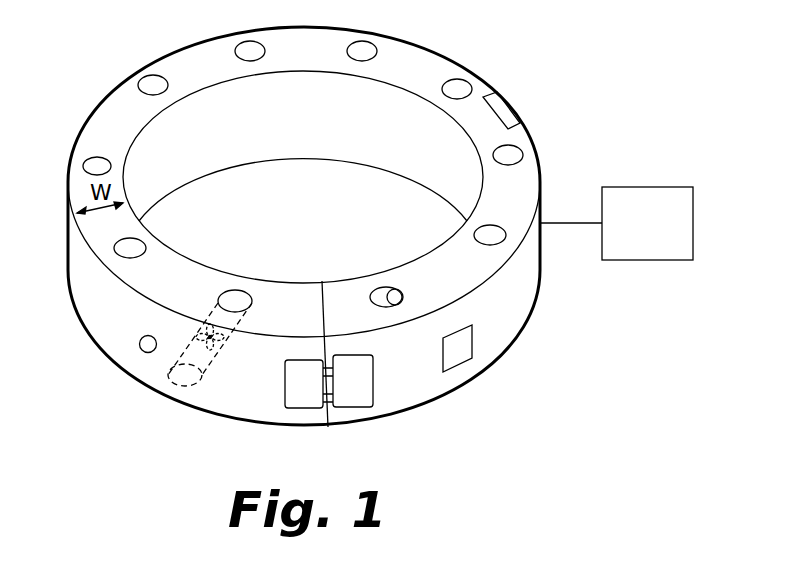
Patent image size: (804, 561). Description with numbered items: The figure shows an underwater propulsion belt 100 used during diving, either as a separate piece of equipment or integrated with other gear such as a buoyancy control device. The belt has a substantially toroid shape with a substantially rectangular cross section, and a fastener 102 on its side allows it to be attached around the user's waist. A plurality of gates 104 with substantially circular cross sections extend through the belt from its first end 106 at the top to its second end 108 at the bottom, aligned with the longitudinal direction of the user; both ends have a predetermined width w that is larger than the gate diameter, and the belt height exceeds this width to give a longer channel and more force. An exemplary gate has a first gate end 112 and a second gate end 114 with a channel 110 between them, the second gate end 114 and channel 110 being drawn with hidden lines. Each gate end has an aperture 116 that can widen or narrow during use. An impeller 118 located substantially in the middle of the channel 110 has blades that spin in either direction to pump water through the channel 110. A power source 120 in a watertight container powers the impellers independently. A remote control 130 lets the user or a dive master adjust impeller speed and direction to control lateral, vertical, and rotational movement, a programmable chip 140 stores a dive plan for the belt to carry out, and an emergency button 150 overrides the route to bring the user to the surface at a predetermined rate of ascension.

The underwater propulsion belt 100 is at (93, 343).
The fastener 102 is at (305, 402).
The gates 104 is at (92, 163).
The first end 106 is at (182, 58).
The second end 108 is at (135, 380).
The channel 110 is at (205, 355).
The first gate end 112 is at (238, 295).
The second gate end 114 is at (185, 388).
The aperture 116 is at (380, 292).
The impeller 118 is at (210, 328).
The power source 120 is at (500, 104).
The remote control 130 is at (646, 262).
The programmable chip 140 is at (460, 356).
The emergency button 150 is at (145, 340).